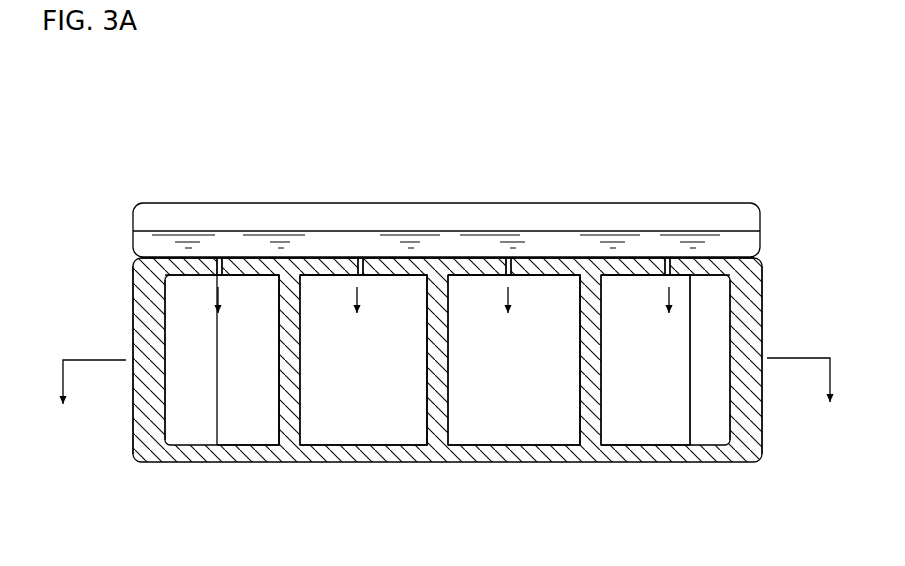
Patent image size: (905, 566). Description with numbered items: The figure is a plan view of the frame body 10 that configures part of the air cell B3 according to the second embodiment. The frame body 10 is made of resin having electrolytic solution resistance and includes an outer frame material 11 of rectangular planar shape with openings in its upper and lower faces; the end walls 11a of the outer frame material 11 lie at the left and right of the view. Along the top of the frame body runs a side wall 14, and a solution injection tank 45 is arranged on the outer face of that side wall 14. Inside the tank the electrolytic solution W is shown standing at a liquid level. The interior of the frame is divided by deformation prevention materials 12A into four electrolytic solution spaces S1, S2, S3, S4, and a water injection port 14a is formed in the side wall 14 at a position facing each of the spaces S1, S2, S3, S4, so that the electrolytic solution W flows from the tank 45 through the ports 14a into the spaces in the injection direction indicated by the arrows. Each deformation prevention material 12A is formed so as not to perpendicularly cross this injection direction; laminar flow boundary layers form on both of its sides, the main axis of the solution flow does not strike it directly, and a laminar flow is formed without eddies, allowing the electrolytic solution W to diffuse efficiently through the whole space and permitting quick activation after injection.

The air cell B3 is at (107, 199).
The frame body 10 is at (132, 463).
The outer frame material 11 is at (760, 462).
The end wall 11a is at (133, 330).
The deformation prevention material 12A is at (300, 405).
The side wall 14 is at (322, 268).
The water injection port 14a is at (216, 258).
The solution injection tank 45 is at (216, 203).
The electrolytic solution W is at (266, 231).
The electrolytic solution space S1 is at (252, 412).
The electrolytic solution space S2 is at (373, 412).
The electrolytic solution space S3 is at (527, 412).
The electrolytic solution space S4 is at (663, 412).